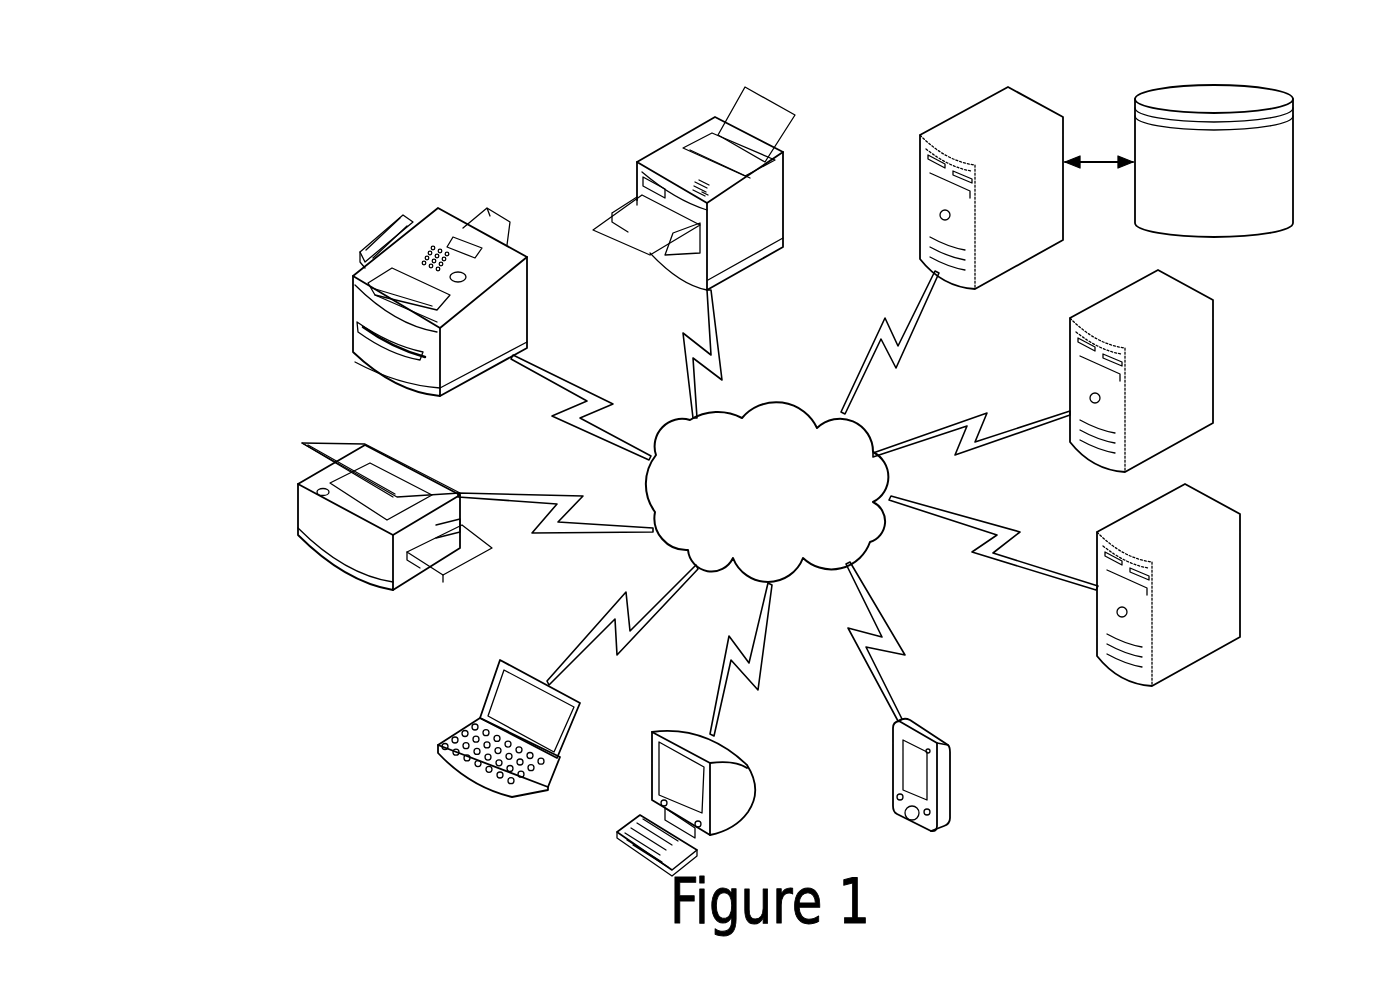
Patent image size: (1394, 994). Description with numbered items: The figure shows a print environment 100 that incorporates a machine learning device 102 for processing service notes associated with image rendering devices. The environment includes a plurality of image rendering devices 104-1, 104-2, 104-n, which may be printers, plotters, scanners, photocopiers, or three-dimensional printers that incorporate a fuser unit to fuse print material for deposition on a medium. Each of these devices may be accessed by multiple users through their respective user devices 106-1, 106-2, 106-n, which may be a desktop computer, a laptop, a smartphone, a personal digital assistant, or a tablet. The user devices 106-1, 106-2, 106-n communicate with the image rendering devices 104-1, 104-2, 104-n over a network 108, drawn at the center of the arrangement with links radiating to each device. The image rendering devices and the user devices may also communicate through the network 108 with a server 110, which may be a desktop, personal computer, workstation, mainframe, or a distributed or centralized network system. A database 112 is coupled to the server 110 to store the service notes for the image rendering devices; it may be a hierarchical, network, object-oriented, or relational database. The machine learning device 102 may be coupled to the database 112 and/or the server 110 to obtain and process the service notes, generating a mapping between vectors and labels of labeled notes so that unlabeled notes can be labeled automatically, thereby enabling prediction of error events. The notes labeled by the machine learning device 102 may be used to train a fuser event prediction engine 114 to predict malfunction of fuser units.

The print environment 100 is at (612, 48).
The machine learning device 102 is at (1242, 527).
The image rendering device 104-1 is at (640, 162).
The image rendering device 104-2 is at (393, 226).
The image rendering device 104-n is at (302, 476).
The user device 106-1 is at (480, 718).
The user device 106-2 is at (735, 760).
The user device 106-n is at (950, 788).
The network 108 is at (847, 507).
The server 110 is at (921, 134).
The database 112 is at (1294, 140).
The fuser event prediction engine 114 is at (1215, 330).